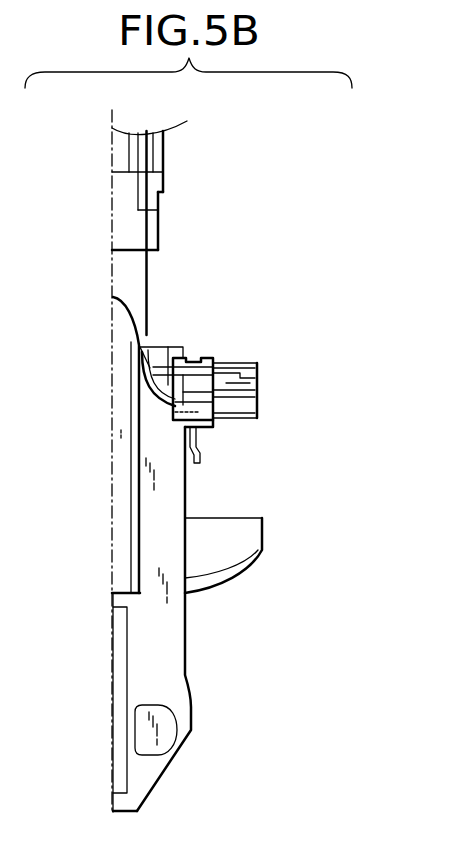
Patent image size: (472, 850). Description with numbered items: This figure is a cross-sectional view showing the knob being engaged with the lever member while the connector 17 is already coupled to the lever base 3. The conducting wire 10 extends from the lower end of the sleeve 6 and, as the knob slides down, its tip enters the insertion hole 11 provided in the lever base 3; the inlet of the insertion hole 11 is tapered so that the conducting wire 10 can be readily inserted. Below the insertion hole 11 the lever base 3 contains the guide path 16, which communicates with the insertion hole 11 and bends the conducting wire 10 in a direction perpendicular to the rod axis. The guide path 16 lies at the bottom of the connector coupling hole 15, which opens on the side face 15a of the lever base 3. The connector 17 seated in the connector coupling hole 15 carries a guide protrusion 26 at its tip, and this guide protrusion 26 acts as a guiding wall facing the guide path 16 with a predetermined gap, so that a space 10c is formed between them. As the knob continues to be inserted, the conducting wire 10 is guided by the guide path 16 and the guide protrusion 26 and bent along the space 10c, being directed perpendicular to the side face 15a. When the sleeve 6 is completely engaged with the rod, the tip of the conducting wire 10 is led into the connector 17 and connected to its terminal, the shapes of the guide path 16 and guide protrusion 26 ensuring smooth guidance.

The lever base 3 is at (176, 622).
The sleeve 6 is at (165, 158).
The conducting wire 10 is at (147, 272).
The space 10c is at (148, 385).
The insertion hole 11 is at (149, 347).
The connector coupling hole 15 is at (213, 365).
The side face 15a is at (186, 498).
The guide path 16 is at (163, 407).
The connector 17 is at (248, 385).
The guide protrusion 26 is at (168, 356).